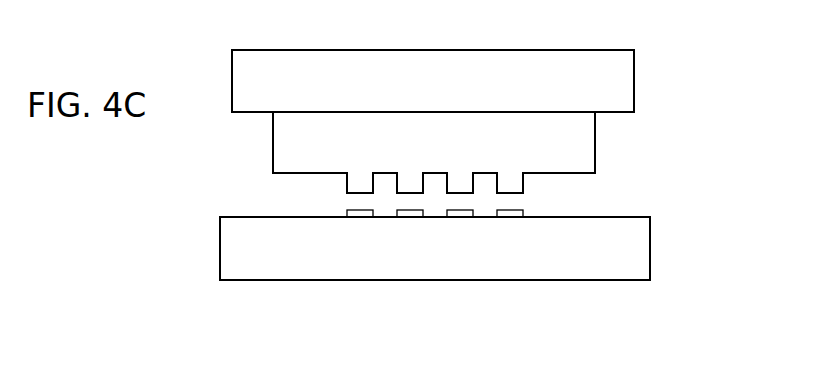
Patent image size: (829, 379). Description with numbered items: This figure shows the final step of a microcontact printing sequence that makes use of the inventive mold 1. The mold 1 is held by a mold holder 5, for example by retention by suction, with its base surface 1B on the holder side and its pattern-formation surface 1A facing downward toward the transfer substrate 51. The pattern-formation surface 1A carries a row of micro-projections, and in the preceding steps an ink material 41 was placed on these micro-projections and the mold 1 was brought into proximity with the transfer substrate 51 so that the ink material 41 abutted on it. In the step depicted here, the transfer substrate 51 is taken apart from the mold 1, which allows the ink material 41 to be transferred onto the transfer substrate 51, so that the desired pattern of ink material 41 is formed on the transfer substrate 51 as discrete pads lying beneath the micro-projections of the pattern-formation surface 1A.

The mold holder 5 is at (617, 80).
The mold 1 is at (580, 140).
The pattern-formation surface 1A is at (548, 182).
The base surface 1B is at (298, 116).
The ink material 41 is at (347, 214).
The transfer substrate 51 is at (629, 250).